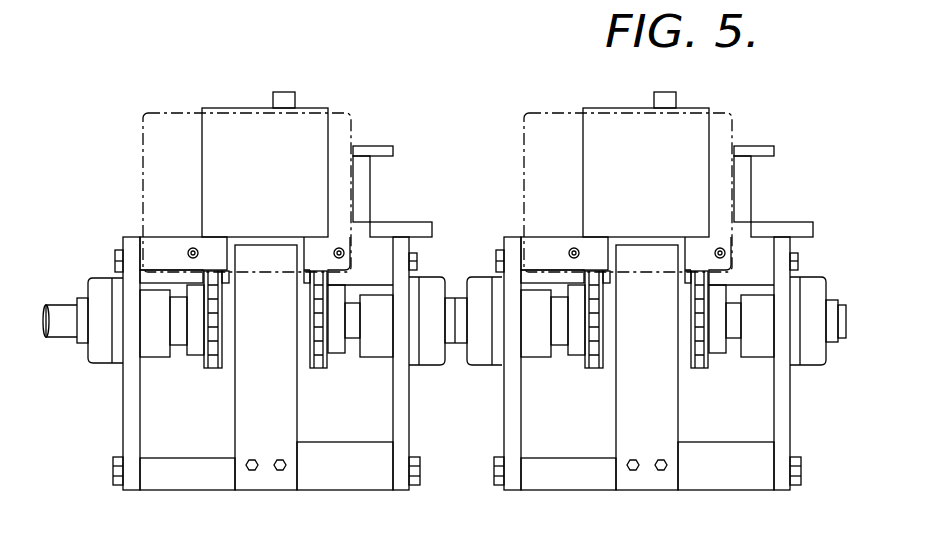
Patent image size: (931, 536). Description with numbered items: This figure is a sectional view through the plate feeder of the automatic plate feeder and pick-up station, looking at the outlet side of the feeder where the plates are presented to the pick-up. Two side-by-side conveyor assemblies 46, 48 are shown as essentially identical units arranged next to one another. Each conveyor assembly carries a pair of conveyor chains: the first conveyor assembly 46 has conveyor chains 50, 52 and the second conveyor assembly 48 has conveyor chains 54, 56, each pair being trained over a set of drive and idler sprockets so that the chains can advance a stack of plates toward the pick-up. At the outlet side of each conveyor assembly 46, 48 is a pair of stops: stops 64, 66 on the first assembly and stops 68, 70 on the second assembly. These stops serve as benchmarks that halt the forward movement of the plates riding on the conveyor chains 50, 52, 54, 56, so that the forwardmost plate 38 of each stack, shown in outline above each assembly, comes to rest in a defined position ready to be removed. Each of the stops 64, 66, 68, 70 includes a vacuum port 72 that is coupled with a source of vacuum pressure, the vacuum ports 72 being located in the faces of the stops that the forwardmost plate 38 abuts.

The forwardmost plate 38 is at (172, 122).
The conveyor assembly 46 is at (128, 172).
The conveyor assembly 48 is at (796, 200).
The conveyor chain 50 is at (213, 370).
The conveyor chain 52 is at (316, 371).
The conveyor chain 54 is at (590, 370).
The conveyor chain 56 is at (707, 370).
The stop 64 is at (157, 245).
The stop 66 is at (372, 248).
The stop 68 is at (538, 245).
The stop 70 is at (752, 258).
The vacuum port 72 is at (191, 249).